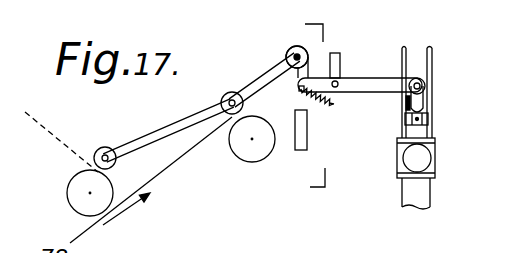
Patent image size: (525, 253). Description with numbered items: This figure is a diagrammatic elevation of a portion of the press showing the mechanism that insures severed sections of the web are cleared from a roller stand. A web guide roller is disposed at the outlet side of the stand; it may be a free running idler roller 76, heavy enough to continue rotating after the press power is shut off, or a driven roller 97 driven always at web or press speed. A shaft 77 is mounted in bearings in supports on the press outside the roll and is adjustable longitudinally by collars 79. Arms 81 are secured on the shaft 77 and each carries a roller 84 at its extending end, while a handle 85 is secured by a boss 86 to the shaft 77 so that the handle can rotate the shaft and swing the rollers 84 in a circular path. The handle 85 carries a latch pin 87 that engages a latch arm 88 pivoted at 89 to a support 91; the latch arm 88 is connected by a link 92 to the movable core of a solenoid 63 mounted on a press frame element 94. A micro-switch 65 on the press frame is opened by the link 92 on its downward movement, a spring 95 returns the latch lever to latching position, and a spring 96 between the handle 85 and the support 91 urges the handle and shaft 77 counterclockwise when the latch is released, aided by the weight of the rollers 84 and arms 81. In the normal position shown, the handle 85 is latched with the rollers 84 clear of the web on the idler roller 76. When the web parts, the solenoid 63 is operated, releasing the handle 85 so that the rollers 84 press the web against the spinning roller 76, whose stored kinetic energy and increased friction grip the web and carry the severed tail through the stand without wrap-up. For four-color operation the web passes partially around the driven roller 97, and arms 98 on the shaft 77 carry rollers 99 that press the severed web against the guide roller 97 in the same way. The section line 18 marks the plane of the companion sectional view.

The section line 18- 18 is at (301, 108).
The solenoid 63 is at (420, 160).
The switch 65 is at (429, 118).
The idler roller 76 is at (245, 153).
The shaft 77 is at (287, 50).
The collars 79 is at (454, 244).
The arms 81 is at (262, 82).
The roller 84 is at (226, 96).
The handle 85 is at (308, 142).
The boss 86 is at (308, 58).
The latch pin 87 is at (300, 92).
The latch arm 88 is at (343, 78).
The pivot 89 is at (338, 88).
The support 91 is at (340, 56).
The link 92 is at (420, 100).
The press frame element 94 is at (417, 193).
The spring 95 is at (404, 106).
The spring 96 is at (312, 105).
The driven roller 97 is at (67, 186).
The arms 98 is at (170, 121).
The rollers 99 is at (103, 147).